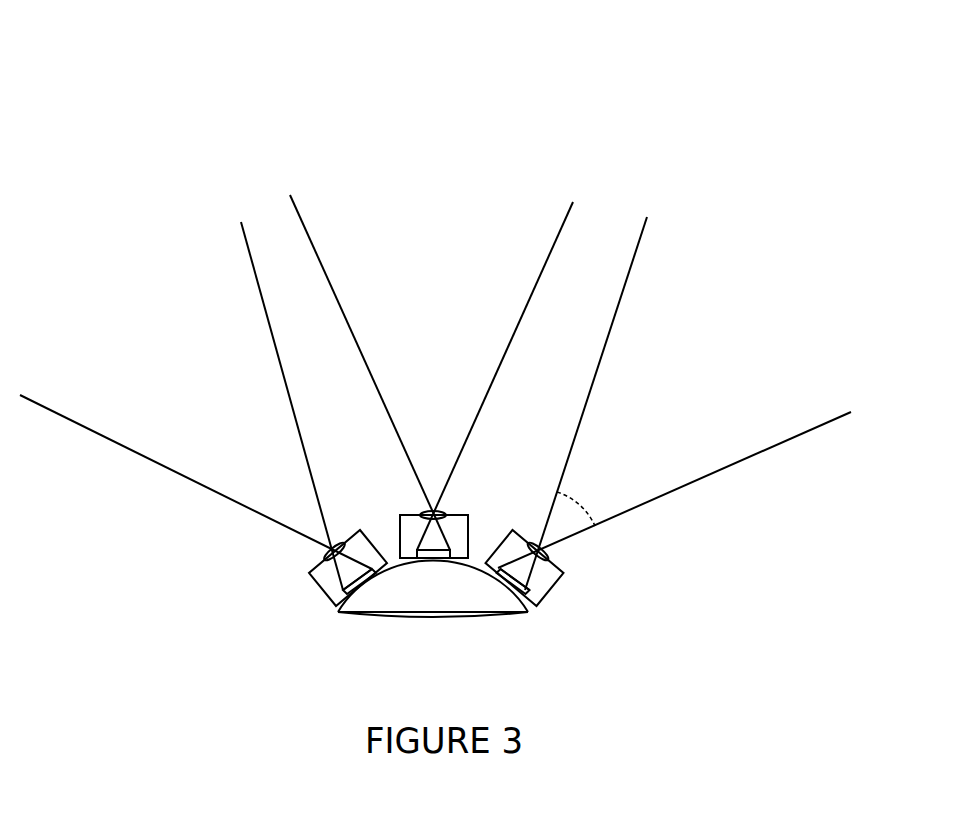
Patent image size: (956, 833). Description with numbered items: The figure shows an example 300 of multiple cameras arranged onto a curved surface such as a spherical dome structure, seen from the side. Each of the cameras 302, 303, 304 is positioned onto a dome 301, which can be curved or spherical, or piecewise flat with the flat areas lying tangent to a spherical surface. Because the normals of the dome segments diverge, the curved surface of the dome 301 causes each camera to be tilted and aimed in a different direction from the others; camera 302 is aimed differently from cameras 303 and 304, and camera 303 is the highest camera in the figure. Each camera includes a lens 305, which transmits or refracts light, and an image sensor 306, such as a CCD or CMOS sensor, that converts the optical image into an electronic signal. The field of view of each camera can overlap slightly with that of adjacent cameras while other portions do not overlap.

The example of multiple cameras arranged onto a curved surface 300 is at (218, 119).
The dome 301 is at (400, 618).
The camera 302 is at (552, 587).
The camera 303 is at (410, 513).
The camera 304 is at (310, 572).
The lens 305 is at (533, 540).
The image sensor 306 is at (532, 594).